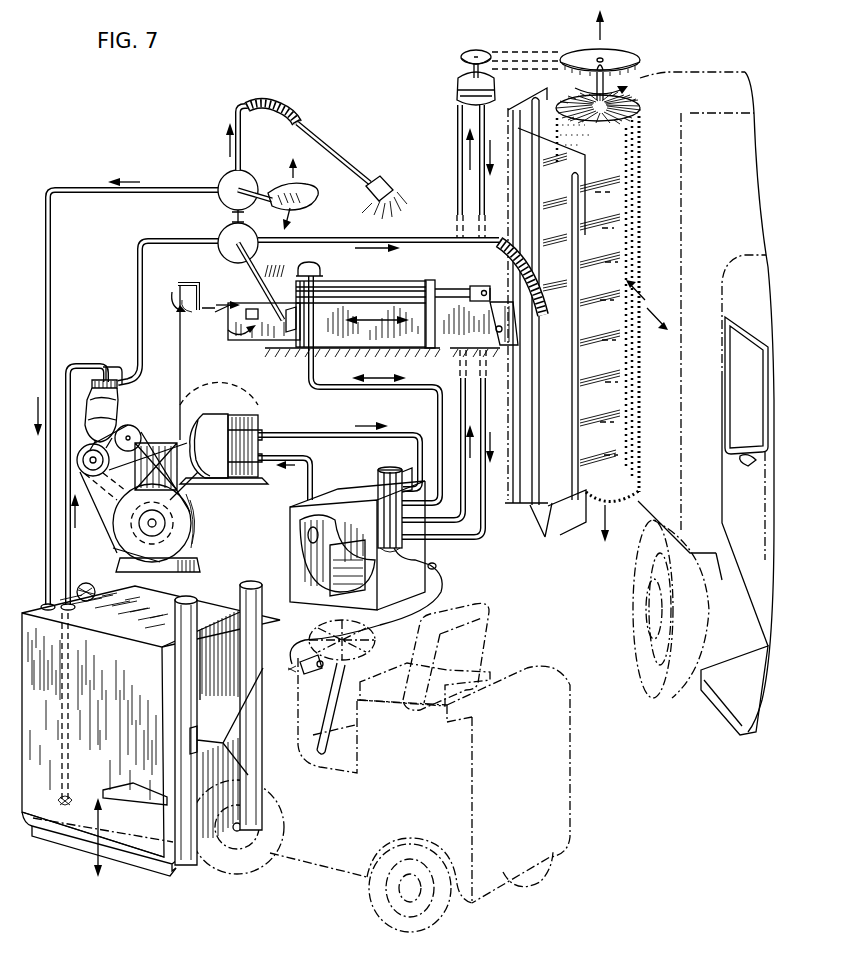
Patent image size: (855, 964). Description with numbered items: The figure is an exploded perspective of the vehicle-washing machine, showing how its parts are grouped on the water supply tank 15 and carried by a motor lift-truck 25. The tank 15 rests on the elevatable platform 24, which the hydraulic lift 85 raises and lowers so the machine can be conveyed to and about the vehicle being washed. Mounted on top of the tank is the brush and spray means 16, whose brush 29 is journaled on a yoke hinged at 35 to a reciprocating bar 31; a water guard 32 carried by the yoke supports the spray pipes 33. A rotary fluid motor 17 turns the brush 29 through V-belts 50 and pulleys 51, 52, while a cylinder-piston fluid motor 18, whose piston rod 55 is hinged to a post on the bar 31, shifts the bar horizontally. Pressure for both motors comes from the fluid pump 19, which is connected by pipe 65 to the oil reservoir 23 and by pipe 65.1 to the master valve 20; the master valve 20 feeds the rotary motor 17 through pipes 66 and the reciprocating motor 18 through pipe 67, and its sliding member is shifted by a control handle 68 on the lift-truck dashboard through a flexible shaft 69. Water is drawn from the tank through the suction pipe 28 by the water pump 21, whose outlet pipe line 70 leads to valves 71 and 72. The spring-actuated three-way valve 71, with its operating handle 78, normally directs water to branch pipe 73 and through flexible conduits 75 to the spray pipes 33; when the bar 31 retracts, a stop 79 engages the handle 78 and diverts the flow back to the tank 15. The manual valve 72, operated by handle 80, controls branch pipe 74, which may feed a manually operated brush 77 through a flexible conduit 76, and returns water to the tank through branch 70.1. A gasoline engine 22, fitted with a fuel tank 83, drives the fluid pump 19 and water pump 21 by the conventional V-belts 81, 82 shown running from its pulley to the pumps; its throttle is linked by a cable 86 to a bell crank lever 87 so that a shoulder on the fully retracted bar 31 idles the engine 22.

The water supply tank 15 is at (107, 701).
The brush and spray means 16 is at (647, 296).
The fluid motor 17 is at (458, 78).
The fluid motor 18 is at (367, 283).
The fluid pump 19 is at (224, 433).
The master valve 20 is at (412, 468).
The water pump 21 is at (121, 404).
The engine 22 is at (190, 536).
The oil reservoir 23 is at (294, 540).
The elevatable platform 24 is at (150, 866).
The motor lift-truck 25 is at (366, 810).
The suction pipe 28 is at (62, 750).
The brush 29 is at (640, 208).
The reciprocating bar 31 is at (259, 342).
The water guard 32 is at (527, 108).
The spray pipes 33 is at (543, 528).
The hinge 35 is at (504, 349).
The V-belts 50 is at (523, 52).
The pulley 51 is at (478, 50).
The pulley 52 is at (632, 54).
The piston rod 55 is at (455, 286).
The pipe 65 is at (270, 464).
The pipe 65.1 is at (300, 431).
The pipes 66 is at (479, 523).
The pipe 67 is at (371, 391).
The control handle 68 is at (304, 670).
The flexible shaft 69 is at (447, 576).
The pipe line 70 is at (163, 241).
The branch 70.1 is at (82, 187).
The valve 71 is at (177, 285).
The valve 72 is at (225, 178).
The branch pipe 73 is at (312, 237).
The branch pipe 74 is at (243, 148).
The flexible conduits 75 is at (530, 258).
The flexible conduit 76 is at (270, 101).
The manually operated brush 77 is at (335, 160).
The operating handle 78 is at (257, 266).
The stop 79 is at (308, 342).
The operating handle 80 is at (262, 189).
The drive belt 81 is at (210, 498).
The drive belt 82 is at (108, 502).
The fuel tank 83 is at (141, 432).
The hydraulic lift 85 is at (195, 672).
The cable 86 is at (181, 360).
The bell crank lever 87 is at (200, 288).